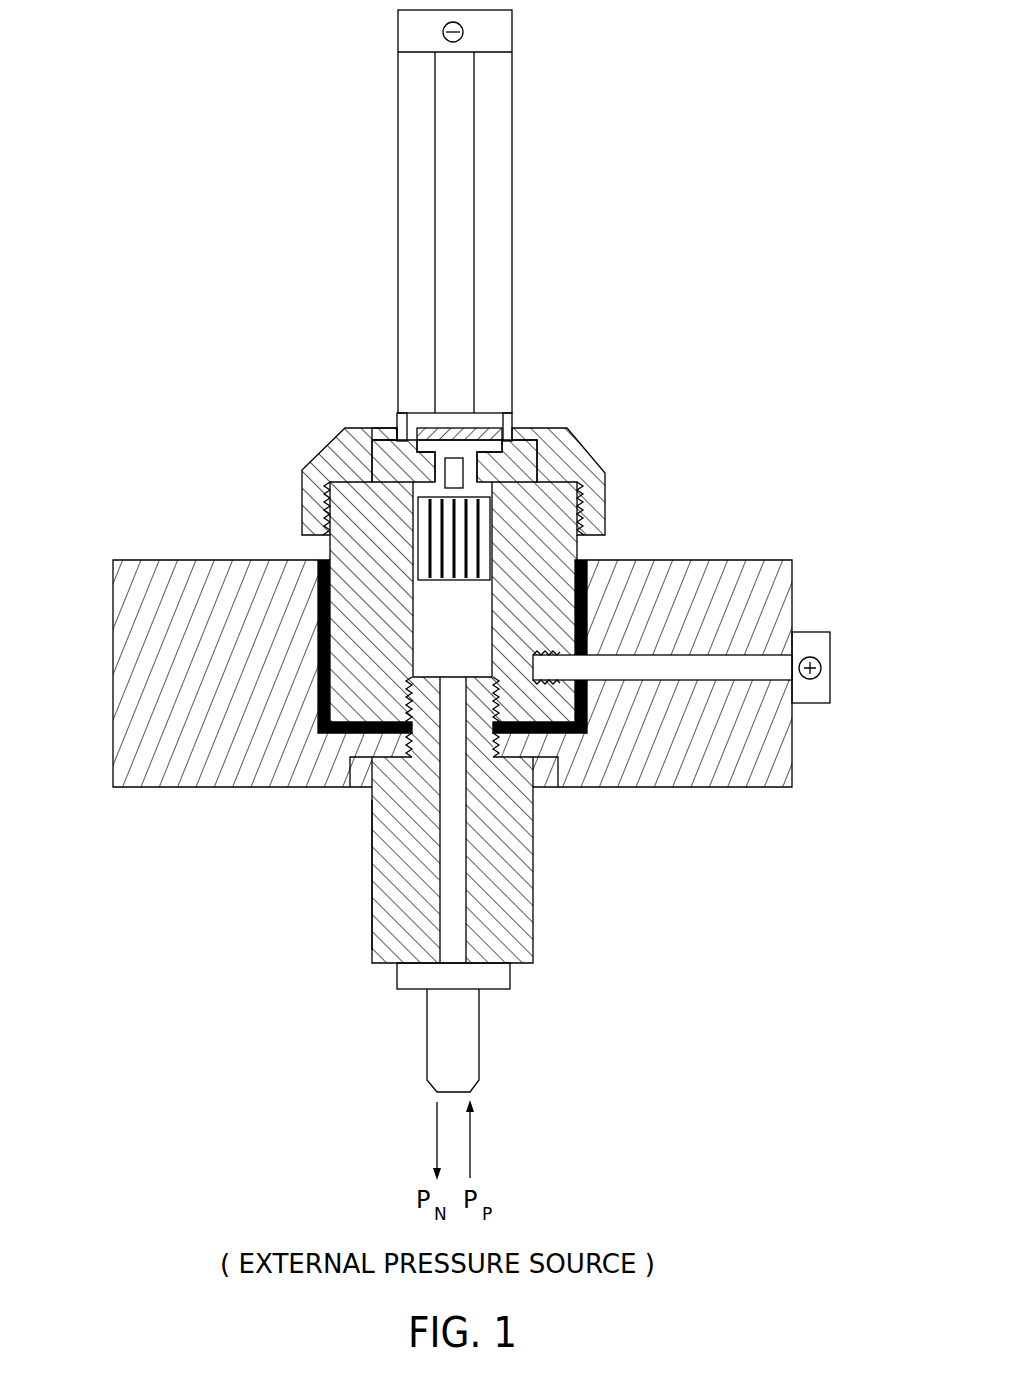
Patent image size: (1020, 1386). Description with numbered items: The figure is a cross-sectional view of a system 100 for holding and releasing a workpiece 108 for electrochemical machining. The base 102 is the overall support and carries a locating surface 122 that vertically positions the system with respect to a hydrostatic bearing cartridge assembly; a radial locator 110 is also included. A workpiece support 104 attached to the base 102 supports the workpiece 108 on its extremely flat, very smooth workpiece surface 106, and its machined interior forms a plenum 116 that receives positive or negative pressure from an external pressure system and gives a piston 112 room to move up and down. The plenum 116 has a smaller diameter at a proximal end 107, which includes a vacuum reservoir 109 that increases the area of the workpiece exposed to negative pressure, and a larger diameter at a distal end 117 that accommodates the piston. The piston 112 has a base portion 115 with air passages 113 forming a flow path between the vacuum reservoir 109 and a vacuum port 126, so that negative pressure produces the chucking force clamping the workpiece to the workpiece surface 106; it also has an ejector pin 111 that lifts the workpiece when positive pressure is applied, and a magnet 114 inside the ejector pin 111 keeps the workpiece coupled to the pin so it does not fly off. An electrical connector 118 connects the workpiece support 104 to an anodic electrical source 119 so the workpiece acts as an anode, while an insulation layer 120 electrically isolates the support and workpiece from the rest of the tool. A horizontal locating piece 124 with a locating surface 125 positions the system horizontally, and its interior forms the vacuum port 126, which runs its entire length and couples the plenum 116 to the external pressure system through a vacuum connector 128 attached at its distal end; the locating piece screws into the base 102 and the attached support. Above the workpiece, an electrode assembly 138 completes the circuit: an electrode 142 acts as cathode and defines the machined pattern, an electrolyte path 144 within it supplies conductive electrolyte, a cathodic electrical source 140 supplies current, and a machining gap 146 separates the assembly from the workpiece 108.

The system 100 is at (785, 398).
The base 102 is at (132, 560).
The workpiece support 104 is at (372, 478).
The workpiece surface 106 is at (412, 427).
The proximal end 107 is at (370, 447).
The workpiece 108 is at (453, 427).
The vacuum reservoir 109 is at (463, 445).
The radial locator 110 is at (575, 440).
The ejector pin 111 is at (473, 468).
The piston 112 is at (490, 517).
The air passages 113 is at (478, 543).
The magnet 114 is at (413, 478).
The base portion 115 is at (418, 550).
The plenum 116 is at (318, 627).
The distal end 117 is at (412, 670).
The electrical connector 118 is at (768, 655).
The anodic electrical source 119 is at (832, 668).
The insulation layer 120 is at (590, 710).
The locating surface 122 is at (153, 790).
The horizontal locating piece 124 is at (533, 863).
The locating surface 125 is at (372, 897).
The vacuum port 126 is at (440, 932).
The vacuum connector 128 is at (512, 975).
The electrode assembly 138 is at (346, 103).
The cathodic electrical source 140 is at (512, 28).
The electrode 142 is at (512, 128).
The electrolyte path 144 is at (474, 240).
The machining gap 146 is at (490, 422).